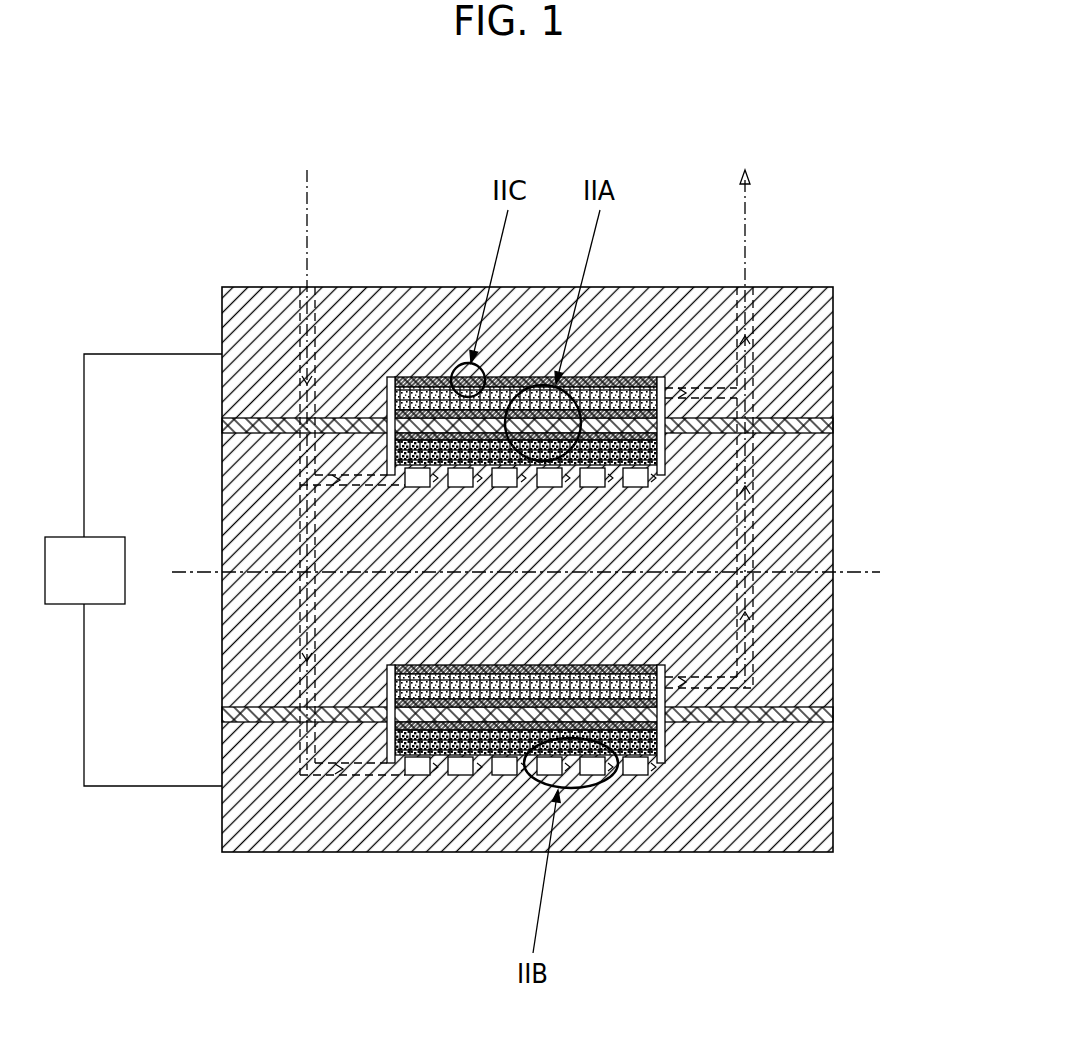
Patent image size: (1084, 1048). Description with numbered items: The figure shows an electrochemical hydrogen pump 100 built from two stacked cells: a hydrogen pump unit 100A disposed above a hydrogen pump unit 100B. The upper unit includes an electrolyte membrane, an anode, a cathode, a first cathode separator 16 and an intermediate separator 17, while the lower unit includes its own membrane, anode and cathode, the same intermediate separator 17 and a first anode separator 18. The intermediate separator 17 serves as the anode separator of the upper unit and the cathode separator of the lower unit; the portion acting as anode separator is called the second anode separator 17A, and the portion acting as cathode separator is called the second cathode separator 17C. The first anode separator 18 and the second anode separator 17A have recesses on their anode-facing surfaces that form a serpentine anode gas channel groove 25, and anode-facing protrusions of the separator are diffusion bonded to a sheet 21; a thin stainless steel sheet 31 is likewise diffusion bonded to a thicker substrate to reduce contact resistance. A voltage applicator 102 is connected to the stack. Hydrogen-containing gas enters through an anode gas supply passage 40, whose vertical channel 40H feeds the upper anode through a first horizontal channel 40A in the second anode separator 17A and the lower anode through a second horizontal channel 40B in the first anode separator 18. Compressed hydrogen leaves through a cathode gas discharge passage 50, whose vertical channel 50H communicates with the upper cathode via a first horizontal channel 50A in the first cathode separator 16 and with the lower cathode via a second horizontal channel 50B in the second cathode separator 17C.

The electrochemical hydrogen pump 100 is at (551, 492).
The hydrogen pump unit 100A is at (840, 287).
The hydrogen pump unit 100B is at (213, 572).
The voltage applicator 102 is at (103, 587).
The first cathode separator 16 is at (833, 345).
The intermediate separator 17 is at (590, 570).
The second anode separator 17A is at (833, 505).
The second cathode separator 17C is at (833, 643).
The first anode separator 18 is at (833, 777).
The sheet 21 is at (567, 767).
The anode gas channel groove 25 is at (650, 767).
The sheet 31 is at (427, 378).
The anode gas supply passage 40 is at (255, 461).
The first horizontal channel 40A is at (372, 486).
The second horizontal channel 40B is at (372, 776).
The vertical channel 40H is at (297, 342).
The cathode gas discharge passage 50 is at (789, 405).
The first horizontal channel 50A is at (725, 394).
The second horizontal channel 50B is at (705, 690).
The vertical channel 50H is at (753, 340).